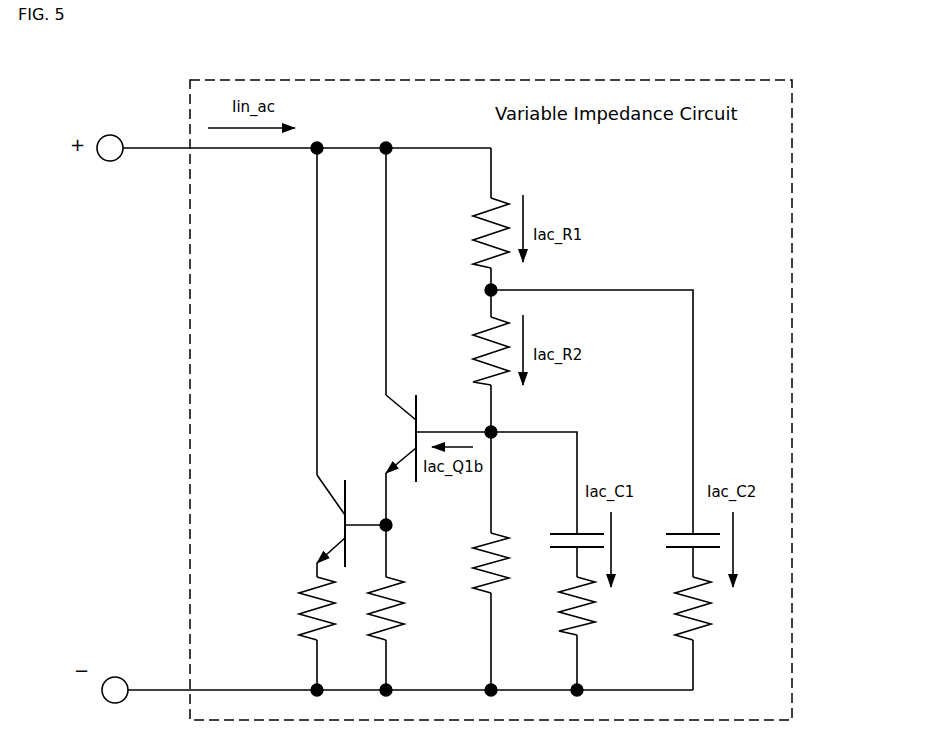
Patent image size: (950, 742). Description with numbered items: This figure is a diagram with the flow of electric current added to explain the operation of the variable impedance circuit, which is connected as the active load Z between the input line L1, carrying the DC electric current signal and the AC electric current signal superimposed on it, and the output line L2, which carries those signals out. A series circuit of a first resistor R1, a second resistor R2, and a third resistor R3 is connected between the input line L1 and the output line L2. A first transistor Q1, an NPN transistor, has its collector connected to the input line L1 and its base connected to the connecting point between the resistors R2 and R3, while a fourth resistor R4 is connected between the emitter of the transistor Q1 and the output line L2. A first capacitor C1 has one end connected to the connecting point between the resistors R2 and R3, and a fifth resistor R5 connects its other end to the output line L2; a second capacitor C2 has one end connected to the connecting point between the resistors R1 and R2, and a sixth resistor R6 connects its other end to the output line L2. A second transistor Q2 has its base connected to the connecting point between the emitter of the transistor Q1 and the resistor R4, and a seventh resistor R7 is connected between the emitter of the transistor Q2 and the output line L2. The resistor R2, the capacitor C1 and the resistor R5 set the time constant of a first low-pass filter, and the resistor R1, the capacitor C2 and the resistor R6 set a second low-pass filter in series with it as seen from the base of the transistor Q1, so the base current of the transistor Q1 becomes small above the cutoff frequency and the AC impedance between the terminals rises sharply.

The input line L1 is at (163, 147).
The output line L2 is at (165, 688).
The first resistor R1 is at (473, 233).
The second resistor R2 is at (473, 351).
The third resistor R3 is at (502, 570).
The fourth resistor R4 is at (403, 608).
The fifth resistor R5 is at (589, 614).
The sixth resistor R6 is at (703, 616).
The seventh resistor R7 is at (301, 608).
The first capacitor C1 is at (570, 524).
The second capacitor C2 is at (688, 524).
The first transistor Q1 is at (431, 438).
The second transistor Q2 is at (340, 521).
The active load Z is at (796, 163).